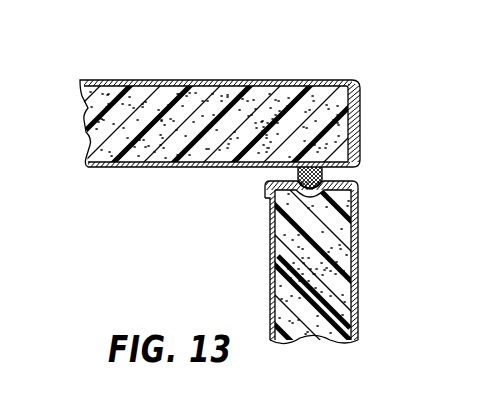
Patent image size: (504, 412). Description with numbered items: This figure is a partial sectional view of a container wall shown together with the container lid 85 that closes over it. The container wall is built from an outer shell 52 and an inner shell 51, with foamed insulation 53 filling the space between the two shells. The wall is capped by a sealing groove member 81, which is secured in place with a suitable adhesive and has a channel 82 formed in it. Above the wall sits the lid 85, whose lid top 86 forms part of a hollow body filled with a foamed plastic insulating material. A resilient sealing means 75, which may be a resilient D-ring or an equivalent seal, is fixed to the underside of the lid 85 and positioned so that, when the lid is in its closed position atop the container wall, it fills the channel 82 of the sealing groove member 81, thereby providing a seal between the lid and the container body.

The container lid 85 is at (243, 98).
The lid top 86 is at (255, 66).
The resilient sealing means 75 is at (324, 172).
The sealing groove member 81 is at (355, 186).
The channel 82 is at (276, 210).
The inner shell 51 is at (320, 276).
The foamed insulation 53 is at (292, 268).
The outer shell 52 is at (357, 300).